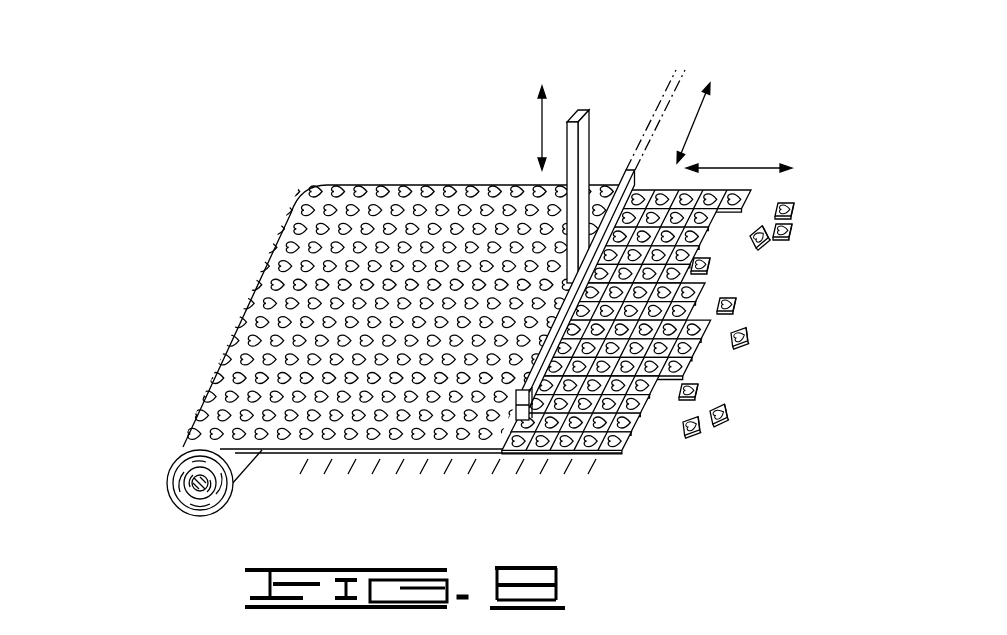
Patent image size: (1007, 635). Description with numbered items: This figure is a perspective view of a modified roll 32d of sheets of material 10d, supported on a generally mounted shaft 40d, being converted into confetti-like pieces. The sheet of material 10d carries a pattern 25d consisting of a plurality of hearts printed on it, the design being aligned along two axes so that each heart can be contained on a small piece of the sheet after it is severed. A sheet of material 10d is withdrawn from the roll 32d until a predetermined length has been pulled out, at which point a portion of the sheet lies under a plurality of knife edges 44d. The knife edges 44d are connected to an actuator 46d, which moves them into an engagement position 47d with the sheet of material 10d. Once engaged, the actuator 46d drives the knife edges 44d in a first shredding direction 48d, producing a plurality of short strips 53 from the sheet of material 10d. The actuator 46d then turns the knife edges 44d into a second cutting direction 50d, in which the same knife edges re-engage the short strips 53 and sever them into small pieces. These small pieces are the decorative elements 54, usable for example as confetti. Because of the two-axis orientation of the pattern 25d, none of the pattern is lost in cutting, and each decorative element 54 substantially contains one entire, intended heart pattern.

The sheet of material 10d is at (390, 178).
The pattern 25d is at (622, 452).
The roll 32d is at (167, 470).
The shaft 40d is at (198, 490).
The knife edges 44d is at (522, 420).
The actuator 46d is at (580, 106).
The engagement position 47d is at (540, 120).
The first shredding direction 48d is at (735, 166).
The second cutting direction 50d is at (692, 122).
The short strips 53 is at (377, 440).
The decorative elements 54 is at (792, 234).